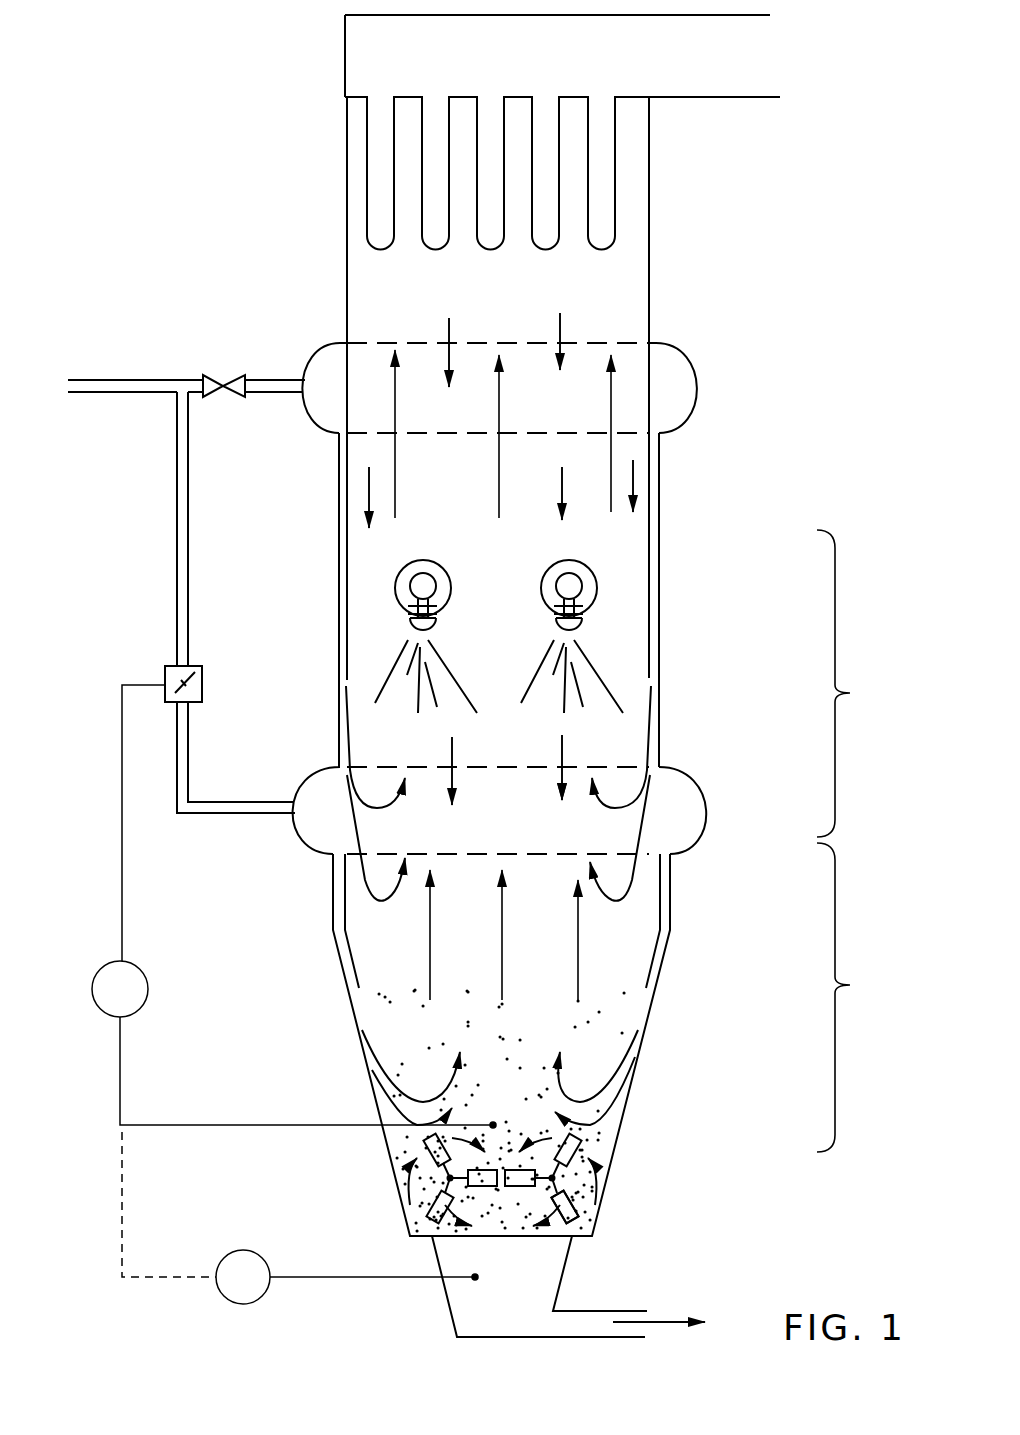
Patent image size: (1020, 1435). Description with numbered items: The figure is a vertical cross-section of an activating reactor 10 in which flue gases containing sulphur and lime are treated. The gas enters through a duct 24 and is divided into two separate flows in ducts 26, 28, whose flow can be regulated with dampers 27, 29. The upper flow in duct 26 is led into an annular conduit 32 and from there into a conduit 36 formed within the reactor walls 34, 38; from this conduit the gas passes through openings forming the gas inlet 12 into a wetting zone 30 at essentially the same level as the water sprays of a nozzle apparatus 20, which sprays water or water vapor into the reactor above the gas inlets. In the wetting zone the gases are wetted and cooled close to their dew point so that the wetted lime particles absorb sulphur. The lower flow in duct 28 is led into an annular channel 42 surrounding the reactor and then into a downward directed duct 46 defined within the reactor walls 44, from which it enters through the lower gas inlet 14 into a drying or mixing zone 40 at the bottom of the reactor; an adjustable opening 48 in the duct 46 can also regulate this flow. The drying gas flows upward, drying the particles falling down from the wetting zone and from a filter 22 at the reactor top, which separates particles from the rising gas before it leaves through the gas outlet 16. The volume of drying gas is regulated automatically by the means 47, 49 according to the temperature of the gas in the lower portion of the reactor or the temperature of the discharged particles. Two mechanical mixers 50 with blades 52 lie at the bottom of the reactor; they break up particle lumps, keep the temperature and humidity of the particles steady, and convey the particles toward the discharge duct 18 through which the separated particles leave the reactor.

The activating reactor 10 is at (262, 185).
The gas inlet 12 is at (655, 658).
The gas inlet 14 is at (645, 1008).
The gas outlet 16 is at (732, 62).
The discharge duct 18 is at (523, 1311).
The nozzle apparatus 20 is at (607, 565).
The filter 22 is at (603, 213).
The duct 24 is at (126, 380).
The duct 26 is at (253, 378).
The damper 27 is at (211, 378).
The duct 28 is at (270, 806).
The damper 29 is at (165, 668).
The wetting zone 30 is at (857, 683).
The annular conduit 32 is at (317, 360).
The reactor wall 34 is at (347, 597).
The conduit 36 is at (340, 540).
The reactor wall 38 is at (340, 648).
The drying zone 40 is at (857, 997).
The annular channel 42 is at (318, 785).
The reactor wall 44 is at (345, 953).
The duct 46 is at (350, 990).
The regulating means 47 is at (148, 987).
The adjustable opening 48 is at (650, 975).
The regulating means 49 is at (220, 1294).
The mechanical mixer 50 is at (551, 1141).
The blade 52 is at (590, 1217).